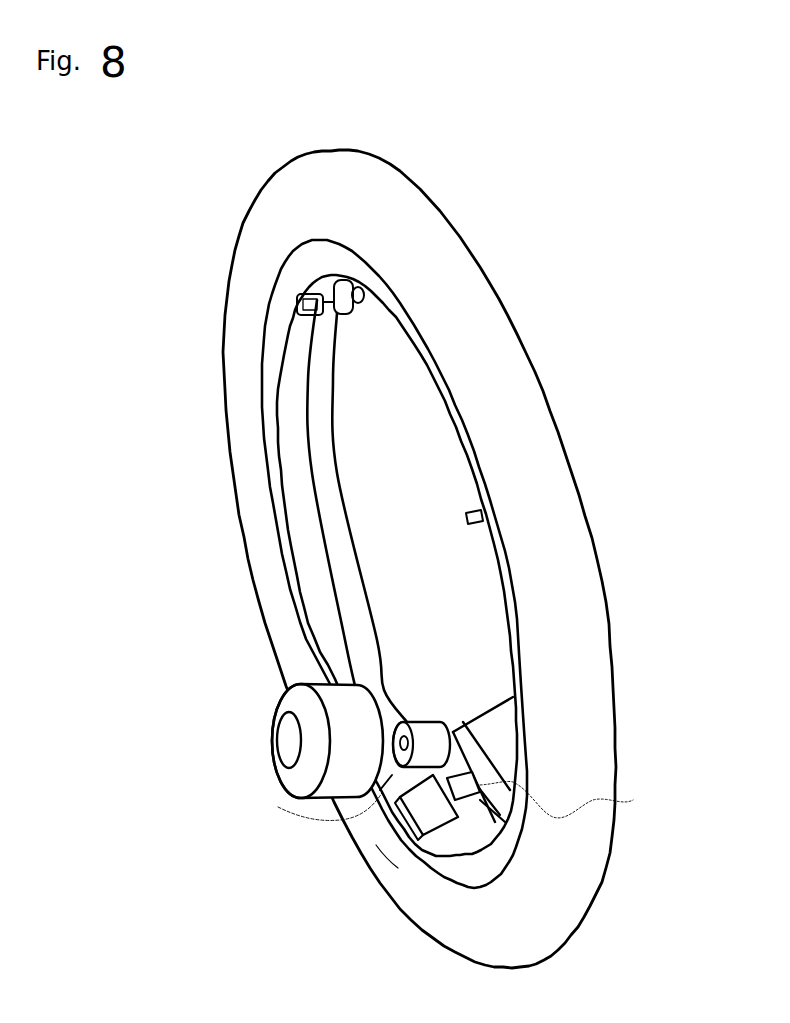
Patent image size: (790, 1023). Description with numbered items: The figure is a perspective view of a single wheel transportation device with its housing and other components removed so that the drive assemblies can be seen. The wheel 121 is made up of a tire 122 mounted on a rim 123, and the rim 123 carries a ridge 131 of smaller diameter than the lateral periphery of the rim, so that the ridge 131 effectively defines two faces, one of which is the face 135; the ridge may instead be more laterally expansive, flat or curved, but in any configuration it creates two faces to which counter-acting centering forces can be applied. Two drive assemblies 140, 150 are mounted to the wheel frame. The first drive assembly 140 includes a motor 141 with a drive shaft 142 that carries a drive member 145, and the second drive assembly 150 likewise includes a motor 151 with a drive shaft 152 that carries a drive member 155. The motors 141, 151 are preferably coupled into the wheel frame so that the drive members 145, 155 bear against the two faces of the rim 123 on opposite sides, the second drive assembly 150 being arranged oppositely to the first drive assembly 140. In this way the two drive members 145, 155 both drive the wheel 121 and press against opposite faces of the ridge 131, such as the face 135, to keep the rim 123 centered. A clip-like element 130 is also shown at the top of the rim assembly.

The wheel 121 is at (397, 565).
The tire 122 is at (472, 570).
The rim 123 is at (462, 872).
The clip 130 is at (348, 315).
The ridge 131 is at (300, 430).
The face 135 is at (330, 487).
The drive assembly 140 is at (319, 742).
The motor 141 is at (328, 741).
The drive shaft 142 is at (304, 810).
The drive member 145 is at (432, 718).
The drive assembly 150 is at (497, 751).
The motor 151 is at (495, 712).
The drive shaft 152 is at (592, 802).
The drive member 155 is at (380, 848).